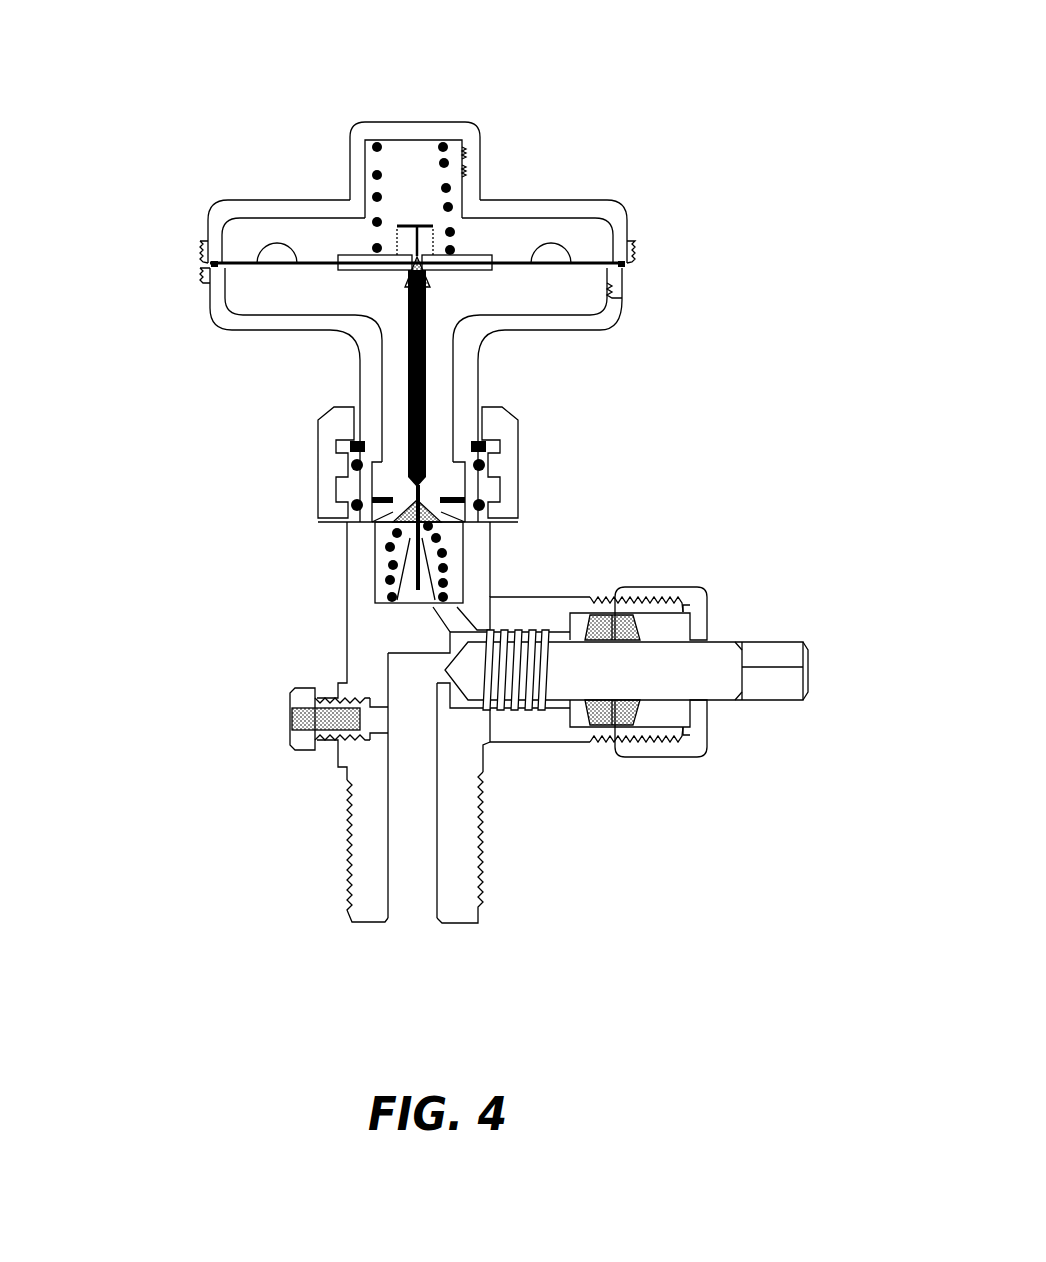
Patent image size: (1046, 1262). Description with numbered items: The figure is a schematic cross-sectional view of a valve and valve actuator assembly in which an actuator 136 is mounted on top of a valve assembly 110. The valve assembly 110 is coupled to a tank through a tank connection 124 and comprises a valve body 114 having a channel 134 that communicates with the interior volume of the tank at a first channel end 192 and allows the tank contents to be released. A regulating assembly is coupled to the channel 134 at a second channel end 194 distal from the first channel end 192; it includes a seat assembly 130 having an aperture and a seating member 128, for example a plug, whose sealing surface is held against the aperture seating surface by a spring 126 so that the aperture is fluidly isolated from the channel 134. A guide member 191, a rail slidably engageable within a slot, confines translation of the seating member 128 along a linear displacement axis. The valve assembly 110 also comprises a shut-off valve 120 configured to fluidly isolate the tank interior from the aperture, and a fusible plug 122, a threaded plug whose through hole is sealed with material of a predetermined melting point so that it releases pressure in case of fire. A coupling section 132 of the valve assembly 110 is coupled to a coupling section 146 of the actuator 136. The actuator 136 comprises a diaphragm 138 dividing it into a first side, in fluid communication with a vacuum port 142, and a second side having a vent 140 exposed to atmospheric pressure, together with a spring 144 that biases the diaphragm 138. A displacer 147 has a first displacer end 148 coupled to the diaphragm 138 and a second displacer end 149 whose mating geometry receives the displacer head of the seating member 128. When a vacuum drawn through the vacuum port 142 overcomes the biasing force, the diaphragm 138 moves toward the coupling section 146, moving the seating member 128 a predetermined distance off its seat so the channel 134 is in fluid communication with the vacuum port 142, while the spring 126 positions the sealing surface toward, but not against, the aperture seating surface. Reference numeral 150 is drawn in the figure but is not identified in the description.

The valve assembly 110 is at (200, 408).
The valve body 114 is at (465, 753).
The shut-off valve 120 is at (713, 655).
The fusible plug 122 is at (300, 715).
The tank connection 124 is at (358, 850).
The spring 126 is at (445, 583).
The seating member 128 is at (372, 524).
The seat assembly 130 is at (385, 505).
The coupling section 132 is at (498, 478).
The channel 134 is at (415, 833).
The actuator 136 is at (150, 118).
The diaphragm 138 is at (592, 258).
The vent 140 is at (470, 160).
The vacuum port 142 is at (620, 285).
The spring 144 is at (370, 125).
The coupling section 146 is at (503, 440).
The displacer 147 is at (425, 355).
The first displacer end 148 is at (423, 267).
The second displacer end 149 is at (355, 445).
The spring button 150 is at (395, 237).
The guide member 191 is at (415, 558).
The first channel end 192 is at (408, 905).
The second channel end 194 is at (383, 583).